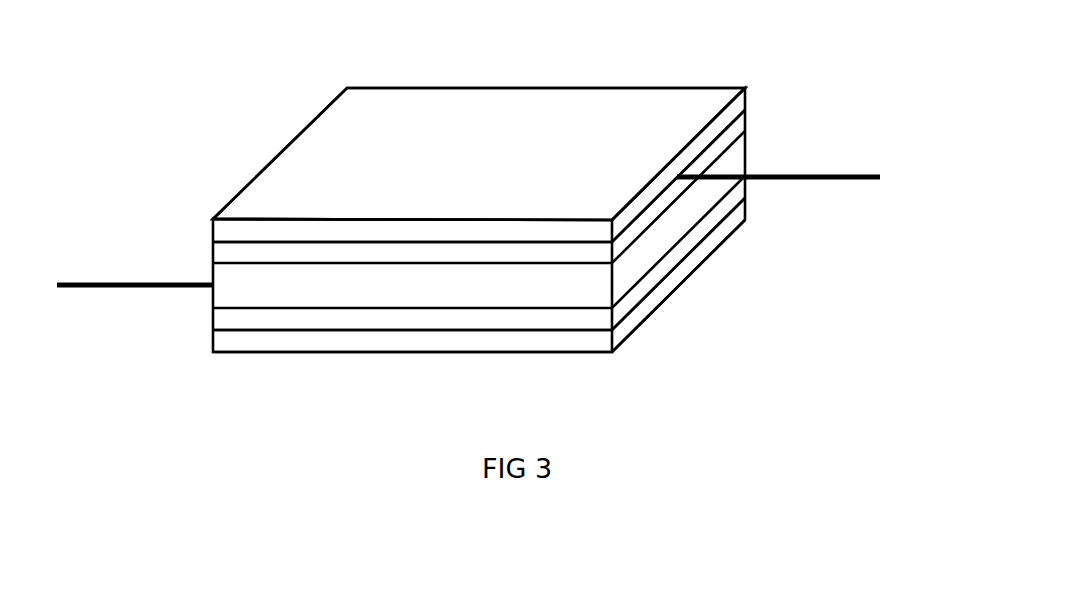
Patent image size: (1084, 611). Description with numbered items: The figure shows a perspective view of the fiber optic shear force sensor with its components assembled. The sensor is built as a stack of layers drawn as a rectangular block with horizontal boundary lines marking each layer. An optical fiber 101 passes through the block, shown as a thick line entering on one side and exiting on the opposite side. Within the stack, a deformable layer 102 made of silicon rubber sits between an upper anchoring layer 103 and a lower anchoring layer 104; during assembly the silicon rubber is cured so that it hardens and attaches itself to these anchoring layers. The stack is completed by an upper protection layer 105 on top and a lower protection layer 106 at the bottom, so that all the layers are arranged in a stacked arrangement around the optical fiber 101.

The optical fiber 101 is at (101, 287).
The deformable layer 102 is at (248, 278).
The upper anchoring layer 103 is at (295, 246).
The lower anchoring layer 104 is at (678, 264).
The upper protection layer 105 is at (569, 119).
The lower protection layer 106 is at (646, 320).